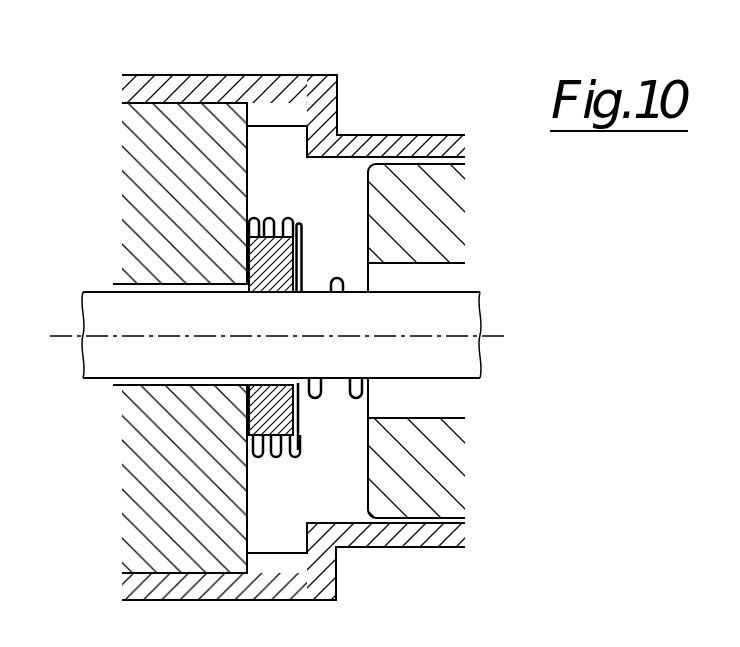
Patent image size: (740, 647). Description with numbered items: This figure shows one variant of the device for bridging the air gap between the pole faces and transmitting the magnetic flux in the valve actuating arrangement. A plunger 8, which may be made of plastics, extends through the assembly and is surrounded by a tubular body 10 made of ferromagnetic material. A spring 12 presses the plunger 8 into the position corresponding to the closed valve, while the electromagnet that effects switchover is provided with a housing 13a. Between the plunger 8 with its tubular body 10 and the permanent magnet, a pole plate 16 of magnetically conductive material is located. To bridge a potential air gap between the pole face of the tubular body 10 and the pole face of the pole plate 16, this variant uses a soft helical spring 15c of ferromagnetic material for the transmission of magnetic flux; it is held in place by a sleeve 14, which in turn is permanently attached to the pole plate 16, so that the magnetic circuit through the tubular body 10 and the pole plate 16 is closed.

The plunger 8 is at (449, 323).
The tubular body 10 is at (422, 467).
The spring 12 is at (355, 405).
The housing 13a is at (336, 76).
The sleeve 14 is at (262, 263).
The soft helical spring 15c is at (287, 220).
The pole plate 16 is at (187, 461).